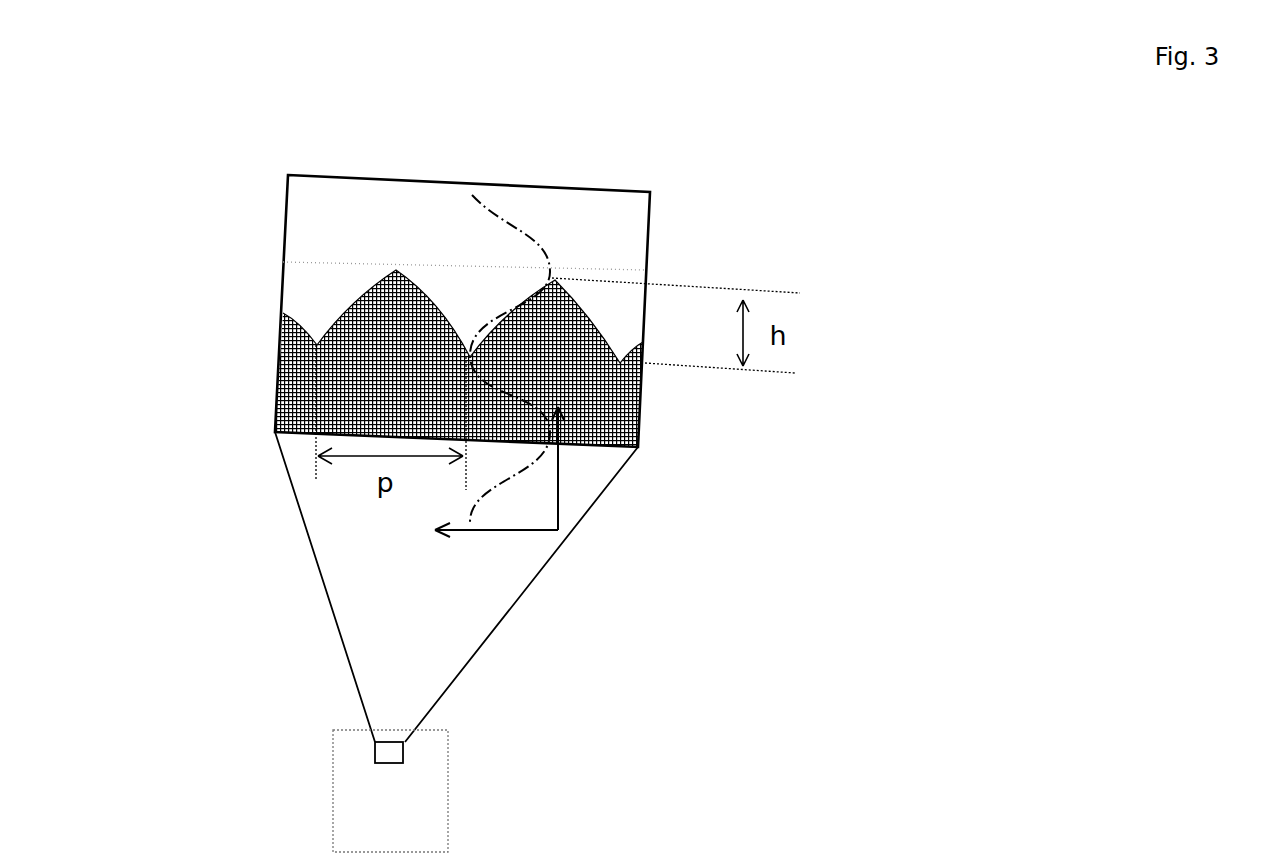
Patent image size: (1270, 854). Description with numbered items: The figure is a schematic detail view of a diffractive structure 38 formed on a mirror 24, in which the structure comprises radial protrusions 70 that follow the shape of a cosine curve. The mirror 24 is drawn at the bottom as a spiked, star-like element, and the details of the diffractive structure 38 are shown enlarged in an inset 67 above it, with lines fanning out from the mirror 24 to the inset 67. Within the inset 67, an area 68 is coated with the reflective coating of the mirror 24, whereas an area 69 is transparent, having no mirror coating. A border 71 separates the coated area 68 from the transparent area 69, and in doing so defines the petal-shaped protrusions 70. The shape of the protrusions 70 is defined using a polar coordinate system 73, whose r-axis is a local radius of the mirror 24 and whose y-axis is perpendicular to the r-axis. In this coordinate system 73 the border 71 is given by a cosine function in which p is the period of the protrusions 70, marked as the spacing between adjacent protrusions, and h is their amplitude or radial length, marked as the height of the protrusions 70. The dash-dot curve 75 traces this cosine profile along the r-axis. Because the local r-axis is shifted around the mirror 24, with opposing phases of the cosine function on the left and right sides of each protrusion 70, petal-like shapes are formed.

The mirror 24 is at (438, 778).
The diffractive structure 38 is at (350, 798).
The inset 67 is at (650, 250).
The area coated with reflective coating 68 is at (302, 412).
The transparent area 69 is at (330, 225).
The radial protrusions 70 is at (560, 347).
The border 71 is at (510, 317).
The polar coordinate system 73 is at (542, 517).
The profile curve 75 is at (503, 225).